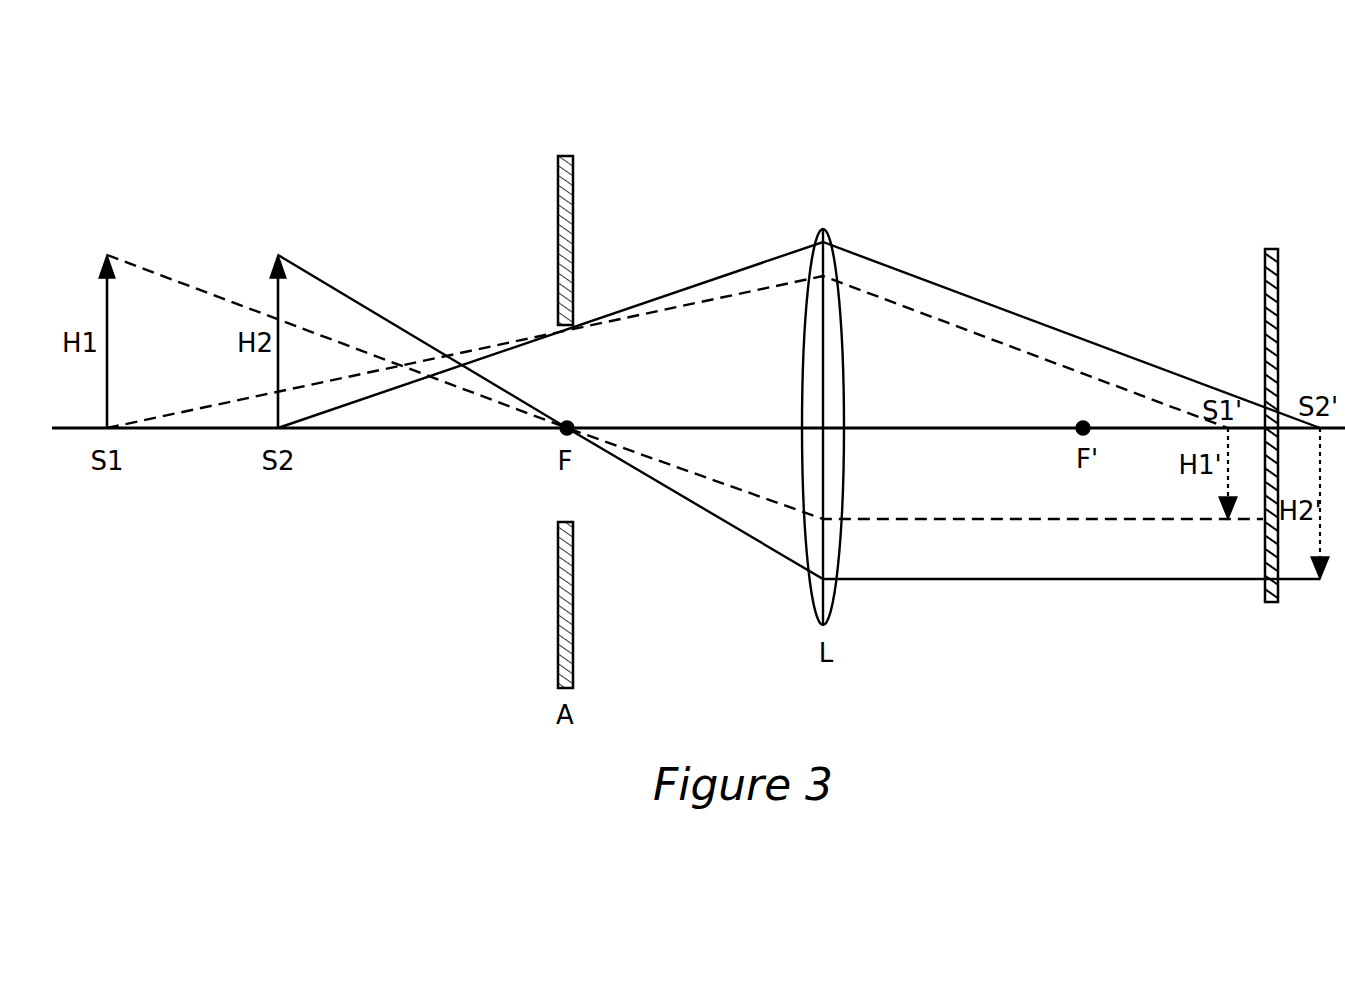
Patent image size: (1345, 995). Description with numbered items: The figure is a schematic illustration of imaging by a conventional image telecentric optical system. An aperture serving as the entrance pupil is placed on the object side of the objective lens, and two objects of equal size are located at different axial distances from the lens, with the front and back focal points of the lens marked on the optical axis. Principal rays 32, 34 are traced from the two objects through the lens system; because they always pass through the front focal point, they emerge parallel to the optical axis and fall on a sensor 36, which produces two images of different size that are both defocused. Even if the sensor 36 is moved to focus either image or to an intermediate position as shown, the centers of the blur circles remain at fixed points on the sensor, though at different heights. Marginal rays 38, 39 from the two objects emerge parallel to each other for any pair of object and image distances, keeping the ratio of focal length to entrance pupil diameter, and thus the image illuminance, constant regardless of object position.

The principal ray 32 is at (685, 405).
The principal ray 34 is at (799, 435).
The sensor 36 is at (1270, 409).
The marginal ray 38 is at (667, 352).
The marginal ray 39 is at (799, 336).